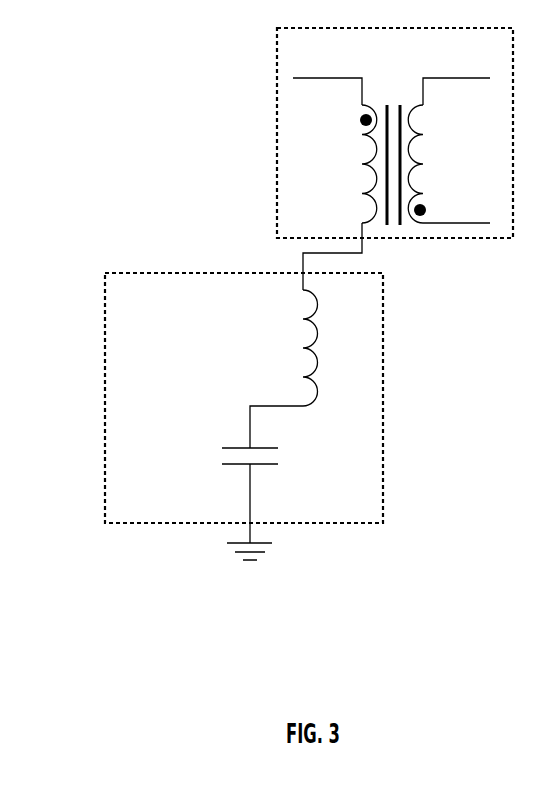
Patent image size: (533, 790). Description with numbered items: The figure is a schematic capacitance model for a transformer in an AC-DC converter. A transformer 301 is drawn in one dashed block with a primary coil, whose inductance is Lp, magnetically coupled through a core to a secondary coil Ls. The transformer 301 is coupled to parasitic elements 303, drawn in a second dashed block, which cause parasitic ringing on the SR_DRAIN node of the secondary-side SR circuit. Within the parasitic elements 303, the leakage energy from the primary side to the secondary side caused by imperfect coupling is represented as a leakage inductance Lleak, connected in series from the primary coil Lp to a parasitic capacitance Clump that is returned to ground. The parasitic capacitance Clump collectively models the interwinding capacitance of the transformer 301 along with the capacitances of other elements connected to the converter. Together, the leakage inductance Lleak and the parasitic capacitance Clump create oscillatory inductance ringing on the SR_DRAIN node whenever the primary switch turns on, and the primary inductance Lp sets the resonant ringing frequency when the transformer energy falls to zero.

The transformer 301 is at (277, 56).
The parasitic elements 303 is at (105, 308).
The inductance of the primary coil Lp is at (335, 184).
The transformer secondary winding Ls is at (449, 150).
The leakage inductance Lleak is at (275, 369).
The parasitic capacitance Clump is at (203, 495).